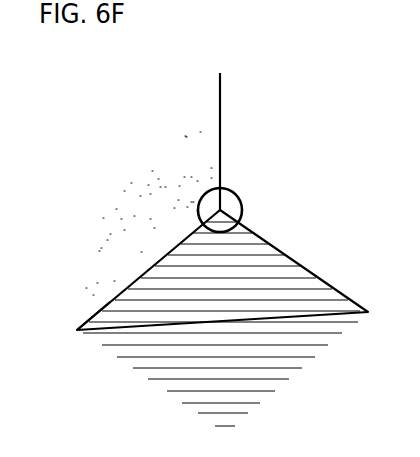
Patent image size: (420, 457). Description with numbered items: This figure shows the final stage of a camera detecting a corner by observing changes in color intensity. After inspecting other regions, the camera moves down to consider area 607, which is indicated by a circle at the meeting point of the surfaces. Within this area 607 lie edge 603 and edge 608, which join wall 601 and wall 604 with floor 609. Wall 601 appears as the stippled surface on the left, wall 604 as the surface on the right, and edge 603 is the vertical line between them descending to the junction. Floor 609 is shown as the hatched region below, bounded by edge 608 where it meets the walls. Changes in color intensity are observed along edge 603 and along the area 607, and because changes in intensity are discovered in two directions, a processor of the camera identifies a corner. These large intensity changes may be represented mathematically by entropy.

The wall 601 is at (149, 213).
The edge 603 is at (220, 120).
The wall 604 is at (222, 270).
The area 607 is at (239, 204).
The edge 608 is at (93, 317).
The floor 609 is at (260, 403).